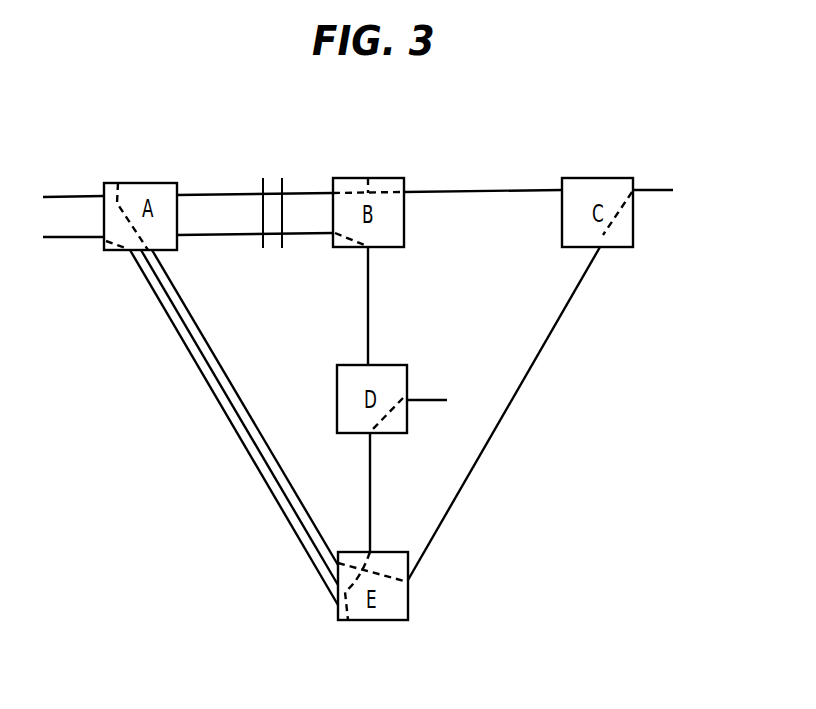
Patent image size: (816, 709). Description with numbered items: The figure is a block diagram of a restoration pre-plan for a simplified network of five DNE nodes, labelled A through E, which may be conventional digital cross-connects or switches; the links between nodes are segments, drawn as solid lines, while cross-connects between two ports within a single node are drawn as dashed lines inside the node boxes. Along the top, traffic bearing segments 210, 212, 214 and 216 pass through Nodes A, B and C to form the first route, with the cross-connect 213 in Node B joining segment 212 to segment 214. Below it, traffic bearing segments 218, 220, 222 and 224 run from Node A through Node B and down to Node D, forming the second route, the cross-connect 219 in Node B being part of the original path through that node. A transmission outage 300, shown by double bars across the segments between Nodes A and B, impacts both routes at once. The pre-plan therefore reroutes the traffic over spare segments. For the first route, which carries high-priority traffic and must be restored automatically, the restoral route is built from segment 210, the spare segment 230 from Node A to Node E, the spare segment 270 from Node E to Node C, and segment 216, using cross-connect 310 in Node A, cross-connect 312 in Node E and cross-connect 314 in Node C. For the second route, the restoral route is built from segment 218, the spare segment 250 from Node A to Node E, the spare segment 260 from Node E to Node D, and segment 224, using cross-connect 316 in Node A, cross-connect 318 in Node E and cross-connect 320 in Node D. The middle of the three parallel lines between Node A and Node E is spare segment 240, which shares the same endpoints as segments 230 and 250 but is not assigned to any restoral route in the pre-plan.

The traffic bearing segment 210 is at (65, 195).
The traffic bearing segment 212 is at (185, 193).
The cross-connect 213 is at (368, 178).
The traffic bearing segment 214 is at (510, 192).
The traffic bearing segment 216 is at (653, 190).
The traffic bearing segment 218 is at (63, 240).
The cross-connect 219 is at (344, 248).
The traffic bearing segment 220 is at (198, 237).
The traffic bearing segment 222 is at (366, 342).
The traffic bearing segment 224 is at (433, 400).
The spare segment 230 is at (200, 330).
The spare segment 240 is at (212, 387).
The spare segment 250 is at (232, 427).
The spare segment 260 is at (368, 477).
The spare segment 270 is at (532, 365).
The transmission outage 300 is at (266, 146).
The cross-connect 310 is at (118, 183).
The cross-connect 312 is at (408, 582).
The cross-connect 314 is at (612, 241).
The cross-connect 316 is at (113, 251).
The cross-connect 318 is at (348, 620).
The cross-connect 320 is at (388, 433).